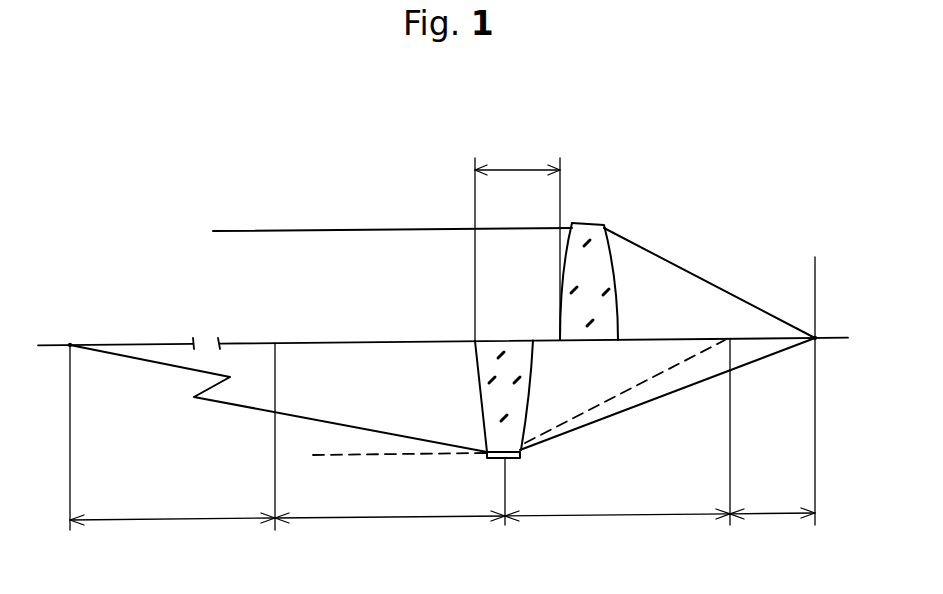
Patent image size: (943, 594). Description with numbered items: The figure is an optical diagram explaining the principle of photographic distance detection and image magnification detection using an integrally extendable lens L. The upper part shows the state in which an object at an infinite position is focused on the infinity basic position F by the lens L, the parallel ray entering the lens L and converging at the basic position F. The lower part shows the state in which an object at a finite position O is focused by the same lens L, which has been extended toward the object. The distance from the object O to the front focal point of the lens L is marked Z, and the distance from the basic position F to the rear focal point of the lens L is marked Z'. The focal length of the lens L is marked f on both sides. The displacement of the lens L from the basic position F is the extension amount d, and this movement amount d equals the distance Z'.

The lens L is at (602, 222).
The object O is at (67, 330).
The infinity basic position F is at (824, 324).
The movement amount d is at (517, 160).
The focal length f is at (502, 503).
The object distance Z is at (172, 507).
The image distance Z' is at (772, 502).